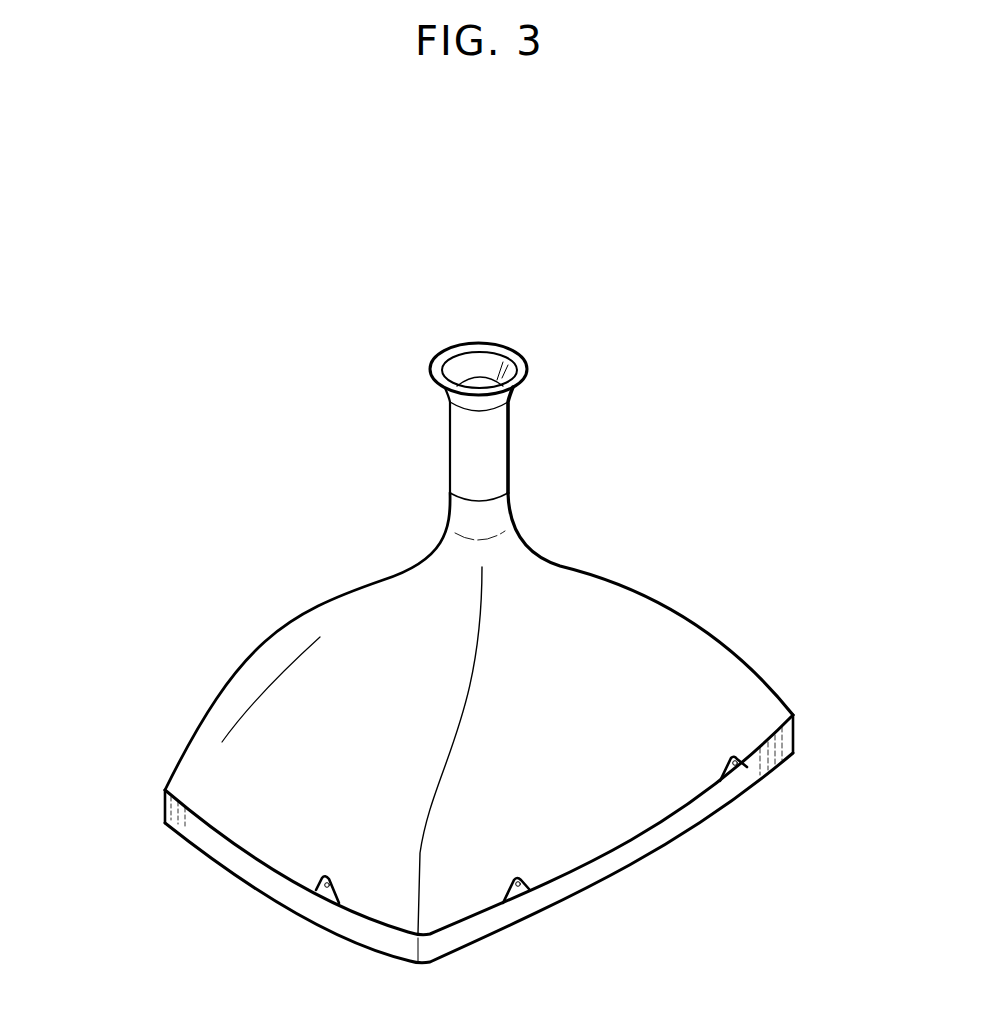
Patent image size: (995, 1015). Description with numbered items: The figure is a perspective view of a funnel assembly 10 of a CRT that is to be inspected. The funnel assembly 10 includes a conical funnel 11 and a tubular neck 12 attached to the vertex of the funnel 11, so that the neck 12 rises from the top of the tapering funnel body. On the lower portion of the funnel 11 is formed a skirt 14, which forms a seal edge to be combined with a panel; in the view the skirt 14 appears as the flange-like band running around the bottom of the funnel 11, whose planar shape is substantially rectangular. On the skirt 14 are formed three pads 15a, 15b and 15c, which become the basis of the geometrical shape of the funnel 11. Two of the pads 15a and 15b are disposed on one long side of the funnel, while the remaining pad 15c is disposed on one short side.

The funnel assembly 10 is at (145, 600).
The funnel 11 is at (238, 687).
The neck 12 is at (510, 428).
The skirt 14 is at (795, 732).
The pad 15a is at (738, 767).
The pad 15b is at (523, 883).
The pad 15c is at (324, 884).